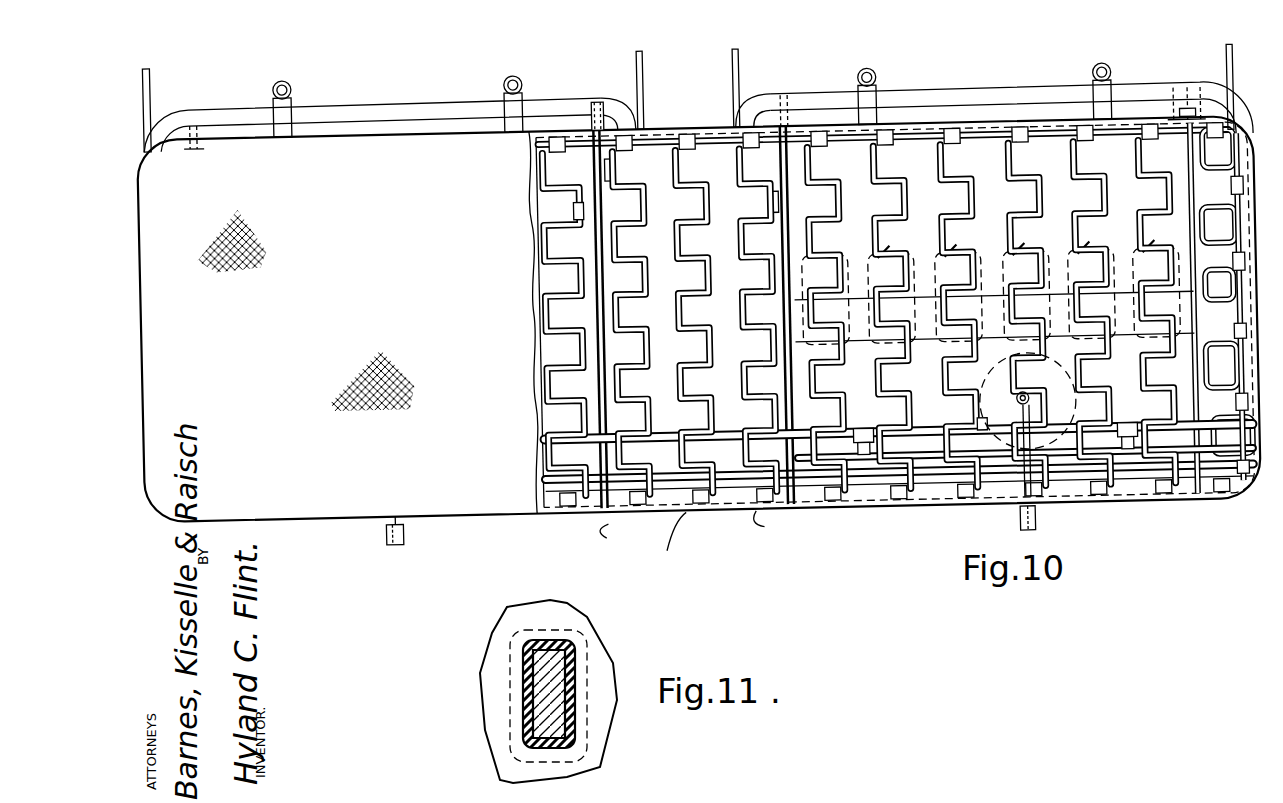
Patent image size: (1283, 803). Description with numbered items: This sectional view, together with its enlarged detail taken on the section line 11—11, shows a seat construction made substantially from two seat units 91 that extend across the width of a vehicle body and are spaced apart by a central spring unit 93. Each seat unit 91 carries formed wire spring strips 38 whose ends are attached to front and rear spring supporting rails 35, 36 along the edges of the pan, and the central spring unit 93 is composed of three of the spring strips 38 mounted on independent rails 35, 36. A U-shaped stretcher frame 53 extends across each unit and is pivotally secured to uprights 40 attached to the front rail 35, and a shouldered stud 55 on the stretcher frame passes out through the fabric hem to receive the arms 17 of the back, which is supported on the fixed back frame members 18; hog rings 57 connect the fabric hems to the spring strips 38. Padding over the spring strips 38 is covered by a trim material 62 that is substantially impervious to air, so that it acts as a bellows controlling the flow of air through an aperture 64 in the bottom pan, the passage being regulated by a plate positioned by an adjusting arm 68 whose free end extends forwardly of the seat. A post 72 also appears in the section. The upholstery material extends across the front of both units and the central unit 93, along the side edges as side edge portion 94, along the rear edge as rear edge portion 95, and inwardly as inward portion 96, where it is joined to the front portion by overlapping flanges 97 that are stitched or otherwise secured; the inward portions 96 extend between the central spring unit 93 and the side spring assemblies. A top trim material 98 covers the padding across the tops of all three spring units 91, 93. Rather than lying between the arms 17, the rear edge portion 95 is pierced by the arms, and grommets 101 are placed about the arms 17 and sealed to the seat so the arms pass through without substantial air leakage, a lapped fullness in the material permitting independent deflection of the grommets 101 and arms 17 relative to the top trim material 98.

In FIG. 10, the section line 11 is at (1180, 100).
In FIG. 10, the arms 17 is at (200, 114).
In FIG. 11, the arms 17 is at (566, 672).
In FIG. 10, the fixed back frame members 18 is at (297, 82).
In FIG. 10, the spring supporting rail 35 is at (650, 440).
In FIG. 10, the spring supporting rail 36 is at (712, 127).
In FIG. 10, the formed wire spring strips 38 is at (676, 383).
In FIG. 10, the uprights 40 is at (851, 432).
In FIG. 10, the U-shaped stretcher frame 53 is at (1186, 352).
In FIG. 10, the shouldered stud 55 is at (1204, 290).
In FIG. 10, the hog rings 57 is at (1000, 262).
In FIG. 10, the trim material 62 is at (1009, 400).
In FIG. 10, the aperture 64 is at (576, 211).
In FIG. 10, the adjusting arm 68 is at (1012, 521).
In FIG. 10, the post 72 is at (156, 64).
In FIG. 10, the seat units 91 is at (1246, 128).
In FIG. 10, the central spring unit 93 is at (727, 442).
In FIG. 10, the side edge portion of upholstery material 94 is at (143, 324).
In FIG. 10, the rear edge portion of upholstery material 95 is at (553, 115).
In FIG. 11, the rear edge portion of upholstery material 95 is at (490, 653).
In FIG. 10, the inward portion of upholstery material 96 is at (612, 284).
In FIG. 10, the overlapping flanges 97 is at (697, 539).
In FIG. 10, the top trim material 98 is at (446, 423).
In FIG. 10, the grommets 101 is at (605, 100).
In FIG. 11, the grommets 101 is at (570, 657).